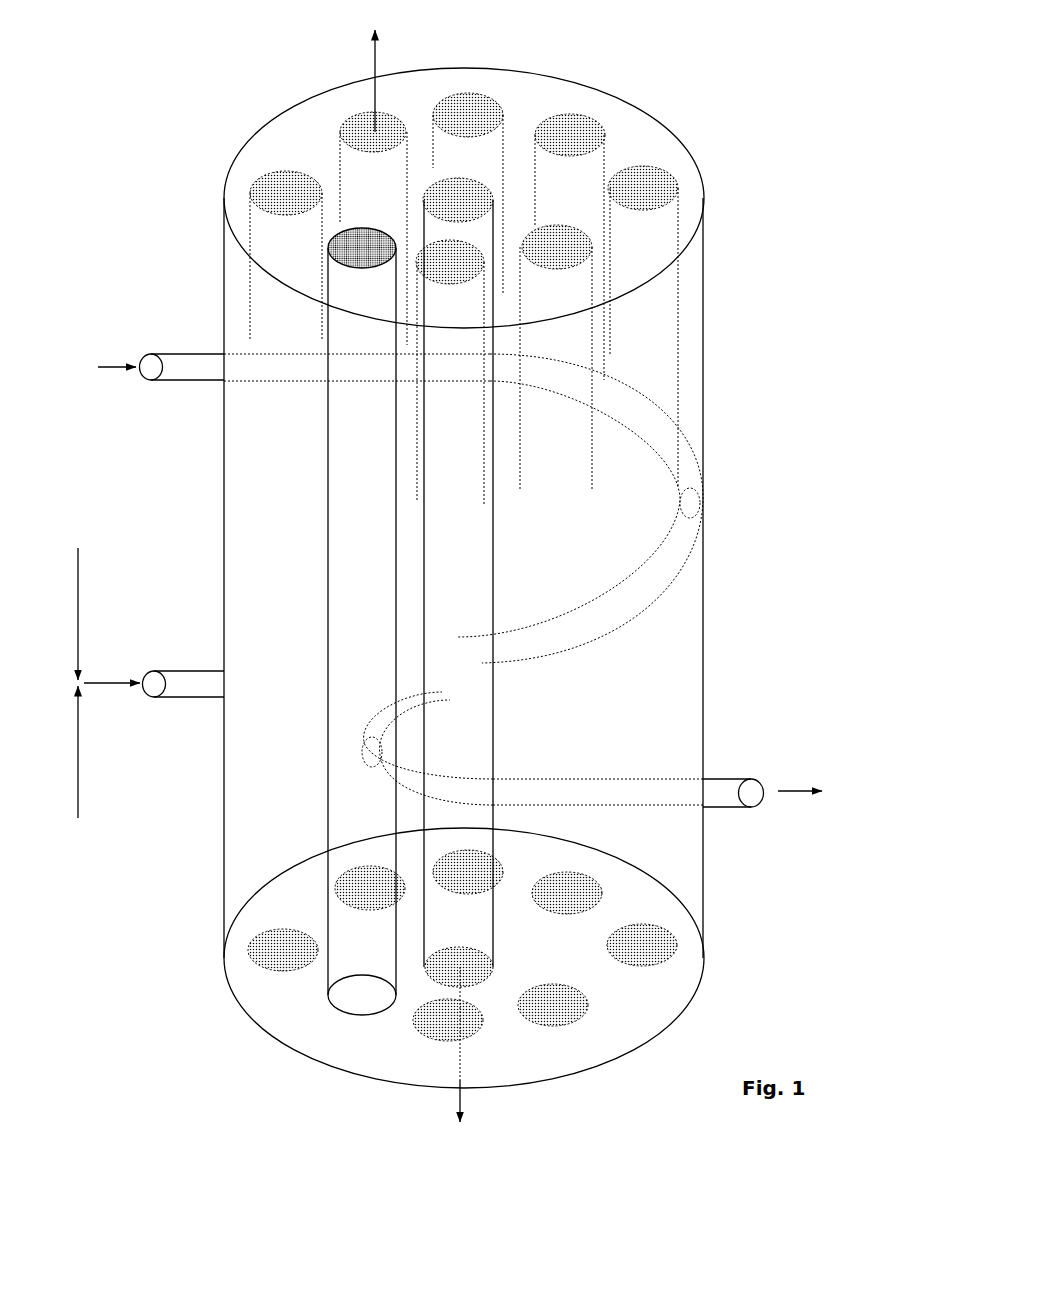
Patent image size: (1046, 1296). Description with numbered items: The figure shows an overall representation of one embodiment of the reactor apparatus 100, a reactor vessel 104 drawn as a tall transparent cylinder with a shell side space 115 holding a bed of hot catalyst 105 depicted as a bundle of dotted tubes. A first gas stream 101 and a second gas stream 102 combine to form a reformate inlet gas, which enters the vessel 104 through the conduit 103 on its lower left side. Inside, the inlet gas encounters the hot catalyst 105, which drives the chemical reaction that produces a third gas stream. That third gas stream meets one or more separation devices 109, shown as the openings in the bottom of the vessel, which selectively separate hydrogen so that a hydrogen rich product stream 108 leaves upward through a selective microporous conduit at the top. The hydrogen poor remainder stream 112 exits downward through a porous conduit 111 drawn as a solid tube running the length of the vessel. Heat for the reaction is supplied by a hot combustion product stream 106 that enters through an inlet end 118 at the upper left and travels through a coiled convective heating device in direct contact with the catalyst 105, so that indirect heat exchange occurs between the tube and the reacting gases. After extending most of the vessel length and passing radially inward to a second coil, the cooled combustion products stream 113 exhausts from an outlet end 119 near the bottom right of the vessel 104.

The heat exchanger apparatus 100 is at (538, 578).
The first gas stream 101 is at (82, 597).
The second gas stream 102 is at (85, 766).
The conduit 103 is at (154, 700).
The vessel 104 is at (705, 658).
The catalyst 105 is at (524, 212).
The hot combustion product stream 106 is at (96, 367).
The hydrogen rich product stream 108 is at (377, 67).
The separation devices 109 is at (413, 1029).
The porous conduit 111 is at (449, 197).
The remainder stream 112 is at (431, 1049).
The cooled combustion products stream 113 is at (822, 793).
The shell side space 115 is at (287, 617).
The inlet end 118 is at (182, 381).
The outlet end 119 is at (563, 749).